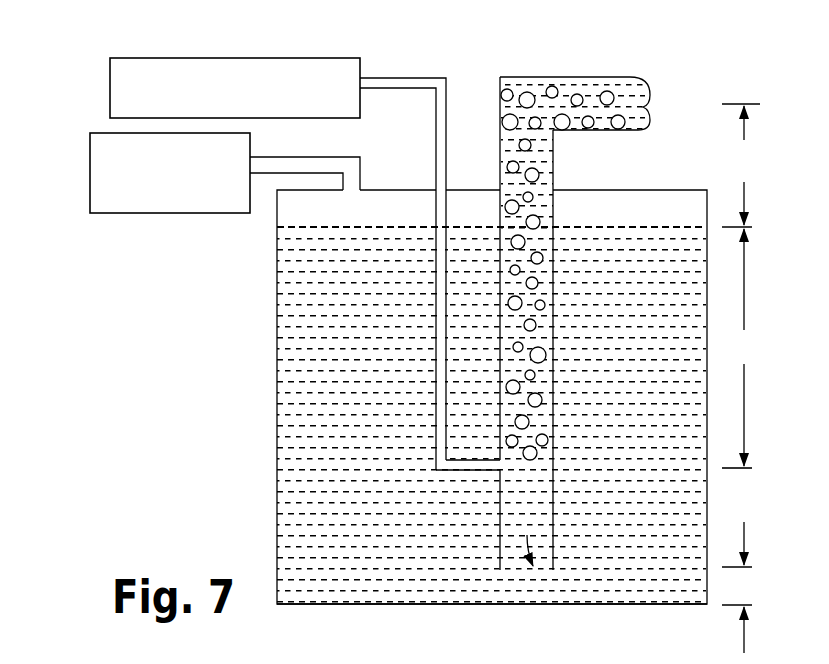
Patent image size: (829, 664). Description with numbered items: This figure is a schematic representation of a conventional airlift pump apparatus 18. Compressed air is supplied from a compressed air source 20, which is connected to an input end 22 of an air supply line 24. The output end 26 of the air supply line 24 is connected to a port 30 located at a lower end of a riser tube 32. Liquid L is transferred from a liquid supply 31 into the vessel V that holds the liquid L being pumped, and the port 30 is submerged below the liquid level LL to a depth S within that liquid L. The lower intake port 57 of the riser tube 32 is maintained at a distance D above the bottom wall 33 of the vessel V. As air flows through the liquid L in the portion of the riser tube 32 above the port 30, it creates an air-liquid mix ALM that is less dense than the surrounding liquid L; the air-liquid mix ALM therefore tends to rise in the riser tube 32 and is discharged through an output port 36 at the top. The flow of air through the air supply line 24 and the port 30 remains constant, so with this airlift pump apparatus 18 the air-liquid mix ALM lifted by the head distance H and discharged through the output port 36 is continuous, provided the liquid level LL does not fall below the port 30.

The airlift pump apparatus 18 is at (615, 293).
The compressed air source 20 is at (110, 88).
The input end 22 is at (363, 78).
The air supply line 24 is at (436, 308).
The output end 26 is at (498, 477).
The port 30 is at (502, 462).
The liquid supply 31 is at (172, 213).
The riser tube 32 is at (555, 287).
The bottom wall 33 is at (441, 606).
The output port 36 is at (649, 100).
The lower intake port 57 is at (527, 539).
The vessel V is at (276, 336).
The liquid L is at (622, 411).
The liquid level LL is at (377, 227).
The air-liquid mix ALM is at (538, 165).
The head distance H is at (741, 165).
The depth S is at (737, 348).
The distance D is at (737, 587).